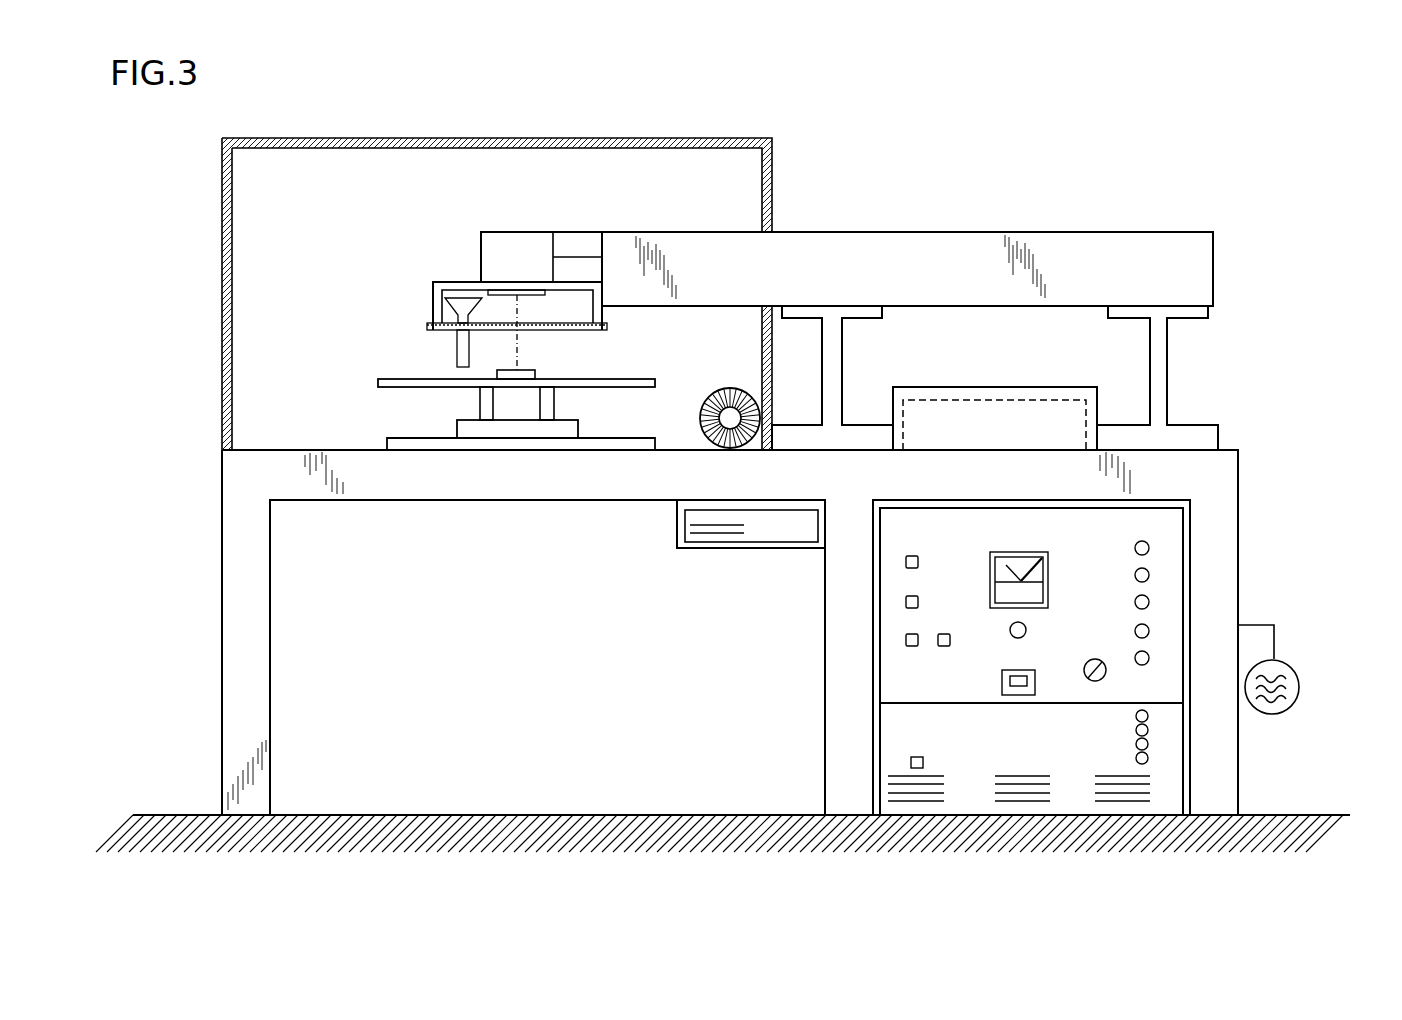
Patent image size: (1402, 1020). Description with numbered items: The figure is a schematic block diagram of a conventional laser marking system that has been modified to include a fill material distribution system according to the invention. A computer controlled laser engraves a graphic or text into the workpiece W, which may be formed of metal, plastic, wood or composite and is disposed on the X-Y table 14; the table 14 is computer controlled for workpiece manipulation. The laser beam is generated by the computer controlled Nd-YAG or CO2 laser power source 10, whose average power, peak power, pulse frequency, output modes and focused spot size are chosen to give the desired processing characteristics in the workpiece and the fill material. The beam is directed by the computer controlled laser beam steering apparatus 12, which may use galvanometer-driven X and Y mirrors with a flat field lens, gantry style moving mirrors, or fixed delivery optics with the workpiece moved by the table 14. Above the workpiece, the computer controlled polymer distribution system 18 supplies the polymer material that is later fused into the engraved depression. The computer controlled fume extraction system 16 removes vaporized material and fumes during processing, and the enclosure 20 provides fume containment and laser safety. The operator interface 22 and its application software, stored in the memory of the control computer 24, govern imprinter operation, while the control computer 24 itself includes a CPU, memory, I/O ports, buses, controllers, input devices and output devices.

The laser power source 10 is at (851, 285).
The laser beam steering apparatus 12 is at (478, 240).
The X-Y table 14 is at (400, 378).
The fume extraction system 16 is at (731, 388).
The polymer distribution system 18 is at (425, 315).
The enclosure 20 is at (333, 138).
The operator interface 22 is at (1002, 387).
The control computer 24 is at (940, 435).
The workpiece W is at (524, 370).